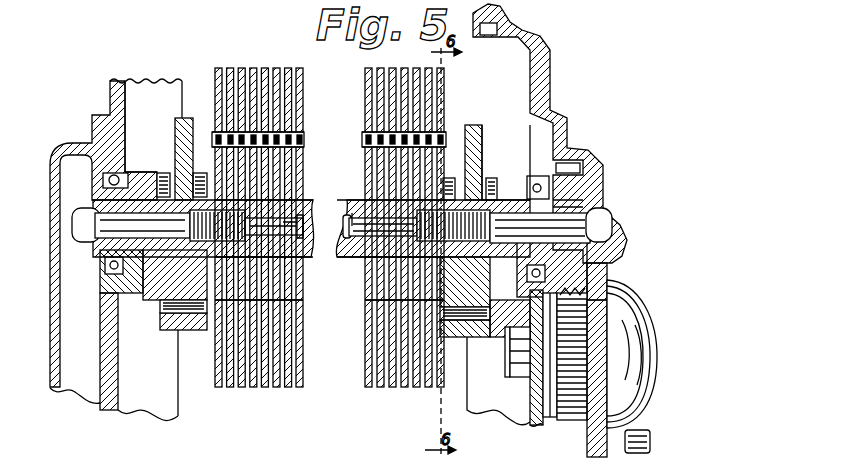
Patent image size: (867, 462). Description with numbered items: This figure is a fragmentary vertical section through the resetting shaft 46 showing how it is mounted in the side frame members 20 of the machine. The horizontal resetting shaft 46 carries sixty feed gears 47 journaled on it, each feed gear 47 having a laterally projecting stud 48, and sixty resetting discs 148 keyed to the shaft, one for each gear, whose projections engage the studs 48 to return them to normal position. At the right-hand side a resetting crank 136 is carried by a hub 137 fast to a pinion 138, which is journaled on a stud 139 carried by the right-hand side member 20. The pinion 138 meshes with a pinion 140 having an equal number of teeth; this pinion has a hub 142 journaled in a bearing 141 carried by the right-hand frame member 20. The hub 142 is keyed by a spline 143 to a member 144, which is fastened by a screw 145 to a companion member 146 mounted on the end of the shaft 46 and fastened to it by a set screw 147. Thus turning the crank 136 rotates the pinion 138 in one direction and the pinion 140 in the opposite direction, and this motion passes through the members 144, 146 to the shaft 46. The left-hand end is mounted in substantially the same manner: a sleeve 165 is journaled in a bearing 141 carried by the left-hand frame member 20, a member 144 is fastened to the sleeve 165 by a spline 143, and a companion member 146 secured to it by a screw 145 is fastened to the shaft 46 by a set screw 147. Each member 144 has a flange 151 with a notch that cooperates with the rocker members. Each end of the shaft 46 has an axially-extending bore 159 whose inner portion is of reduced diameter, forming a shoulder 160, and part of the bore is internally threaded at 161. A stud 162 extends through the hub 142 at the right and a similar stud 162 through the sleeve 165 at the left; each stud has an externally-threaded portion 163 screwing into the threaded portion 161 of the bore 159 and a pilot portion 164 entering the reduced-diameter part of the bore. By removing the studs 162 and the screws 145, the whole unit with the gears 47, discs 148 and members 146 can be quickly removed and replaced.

The side frame 20 is at (110, 89).
The resetting shaft 46 is at (347, 257).
The feed gear 47 is at (277, 50).
The stud 48 is at (363, 138).
The resetting crank 136 is at (652, 443).
The hub 137 is at (612, 358).
The pinion 138 is at (577, 323).
The stud 139 is at (535, 390).
The pinion 140 is at (580, 173).
The bearing 141 is at (110, 185).
The hub 142 is at (590, 204).
The spline 143 is at (152, 186).
The member 144 is at (170, 150).
The screw 145 is at (170, 333).
The companion member 146 is at (182, 292).
The set screw 147 is at (187, 165).
The resetting disc 148 is at (407, 305).
The flange 151 is at (173, 160).
The bore 159 is at (427, 262).
The shoulder 160 is at (468, 200).
The internally-threaded portion 161 is at (433, 200).
The stud 162 is at (72, 222).
The externally-threaded portion 163 is at (198, 300).
The pilot portion 164 is at (352, 213).
The sleeve 165 is at (100, 274).